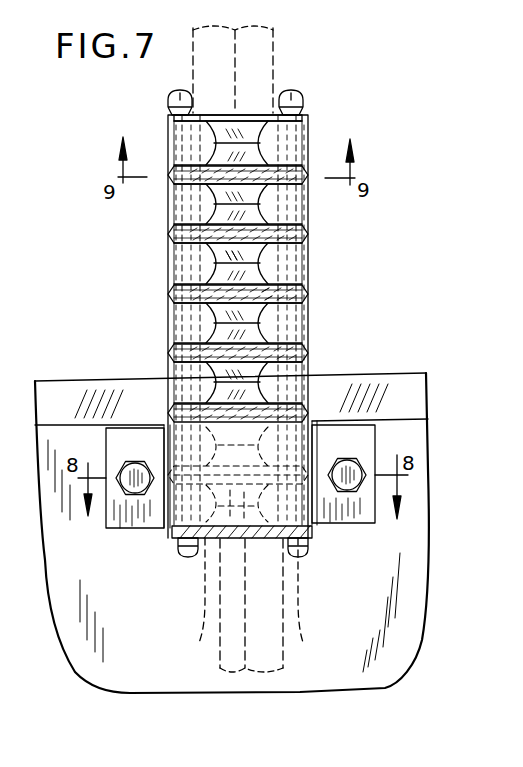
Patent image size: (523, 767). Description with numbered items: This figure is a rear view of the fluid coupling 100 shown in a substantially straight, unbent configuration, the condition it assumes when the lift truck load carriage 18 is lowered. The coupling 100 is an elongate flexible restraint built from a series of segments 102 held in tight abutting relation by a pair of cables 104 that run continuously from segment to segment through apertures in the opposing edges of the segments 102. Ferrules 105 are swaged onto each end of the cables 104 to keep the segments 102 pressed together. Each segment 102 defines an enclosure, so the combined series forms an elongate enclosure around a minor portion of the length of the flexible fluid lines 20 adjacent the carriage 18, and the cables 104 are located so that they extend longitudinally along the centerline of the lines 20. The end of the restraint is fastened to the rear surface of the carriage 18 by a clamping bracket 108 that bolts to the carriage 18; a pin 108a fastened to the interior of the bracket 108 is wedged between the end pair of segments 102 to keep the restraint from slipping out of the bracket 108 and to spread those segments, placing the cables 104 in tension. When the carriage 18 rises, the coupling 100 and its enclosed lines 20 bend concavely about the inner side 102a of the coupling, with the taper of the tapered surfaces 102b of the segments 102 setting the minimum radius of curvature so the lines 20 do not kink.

The lift truck load carriage 18 is at (66, 381).
The flexible fluid lines 20 is at (275, 42).
The fluid coupling 100 is at (336, 328).
The segments 102 is at (170, 318).
The inner side of the coupling 102a is at (250, 252).
The tapered surfaces 102b is at (262, 300).
The cables 104 is at (170, 137).
The ferrules 105 is at (177, 90).
The clamping bracket 108 is at (107, 527).
The pin 108a is at (208, 640).